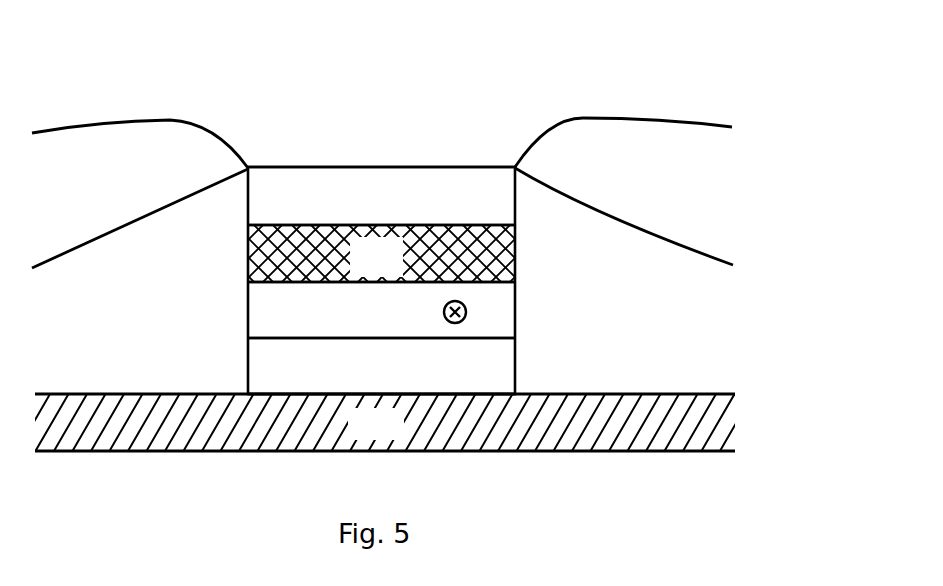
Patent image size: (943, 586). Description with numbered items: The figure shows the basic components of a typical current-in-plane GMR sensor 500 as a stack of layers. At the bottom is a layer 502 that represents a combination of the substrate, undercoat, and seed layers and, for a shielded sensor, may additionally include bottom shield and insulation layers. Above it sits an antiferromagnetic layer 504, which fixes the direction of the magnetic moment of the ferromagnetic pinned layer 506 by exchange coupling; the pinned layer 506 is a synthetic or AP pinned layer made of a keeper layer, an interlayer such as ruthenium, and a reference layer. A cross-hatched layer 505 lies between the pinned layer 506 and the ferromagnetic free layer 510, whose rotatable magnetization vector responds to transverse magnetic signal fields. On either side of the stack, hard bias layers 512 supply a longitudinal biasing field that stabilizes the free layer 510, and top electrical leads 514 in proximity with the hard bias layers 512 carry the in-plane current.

The current-in-plane GMR sensor 500 is at (787, 133).
The layer 502 is at (385, 422).
The antiferromagnetic layer 504 is at (381, 366).
The intermediate (spacer) layer 505 is at (382, 253).
The ferromagnetic pinned layer 506 is at (381, 310).
The ferromagnetic free layer 510 is at (457, 198).
The hard bias layers 512 is at (637, 262).
The top electrical leads 514 is at (693, 186).